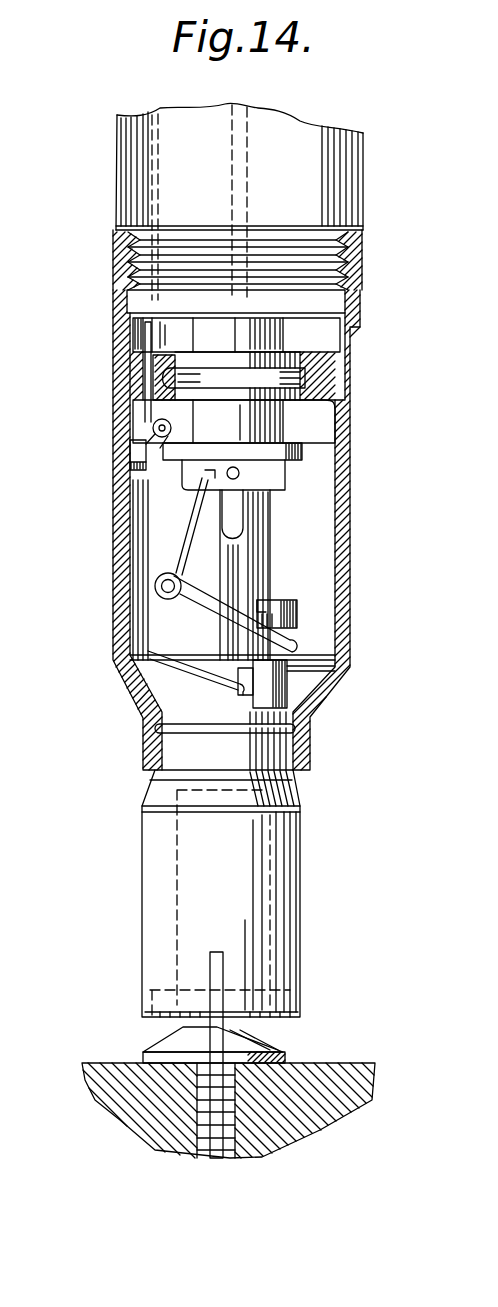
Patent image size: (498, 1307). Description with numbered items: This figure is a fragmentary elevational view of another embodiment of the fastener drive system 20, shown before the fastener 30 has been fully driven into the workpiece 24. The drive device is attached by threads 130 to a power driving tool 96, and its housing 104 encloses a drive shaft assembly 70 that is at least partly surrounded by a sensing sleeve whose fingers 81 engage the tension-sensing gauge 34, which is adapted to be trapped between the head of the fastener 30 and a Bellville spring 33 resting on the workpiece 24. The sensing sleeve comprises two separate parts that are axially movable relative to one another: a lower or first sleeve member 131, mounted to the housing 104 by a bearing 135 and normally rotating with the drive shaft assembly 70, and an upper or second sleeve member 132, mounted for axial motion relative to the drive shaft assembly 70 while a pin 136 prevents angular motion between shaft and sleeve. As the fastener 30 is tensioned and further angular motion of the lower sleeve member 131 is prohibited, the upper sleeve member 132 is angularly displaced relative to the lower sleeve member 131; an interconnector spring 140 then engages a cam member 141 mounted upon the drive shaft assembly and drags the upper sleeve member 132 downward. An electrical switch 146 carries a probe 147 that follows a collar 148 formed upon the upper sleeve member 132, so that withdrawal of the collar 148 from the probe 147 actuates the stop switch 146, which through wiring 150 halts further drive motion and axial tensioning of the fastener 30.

The power driving tool 96 is at (337, 175).
The threads 130 is at (345, 268).
The housing 104 is at (350, 497).
The wiring 150 is at (133, 335).
The pin 136 is at (300, 425).
The probe 147 is at (152, 428).
The collar 148 is at (175, 455).
The electrical switch 146 is at (142, 455).
The upper sleeve member 132 is at (302, 457).
The drive shaft assembly 70 is at (270, 560).
The interconnector spring 140 is at (158, 592).
The cam member 141 is at (298, 612).
The lower sleeve member 131 is at (287, 688).
The bearing 135 is at (300, 728).
The fastener drive system 20 is at (305, 858).
The fingers 81 is at (290, 1000).
The fastener 30 is at (215, 1150).
The tension-sensing gauge 34 is at (270, 1025).
The Bellville spring 33 is at (285, 1057).
The workpiece 24 is at (350, 1107).